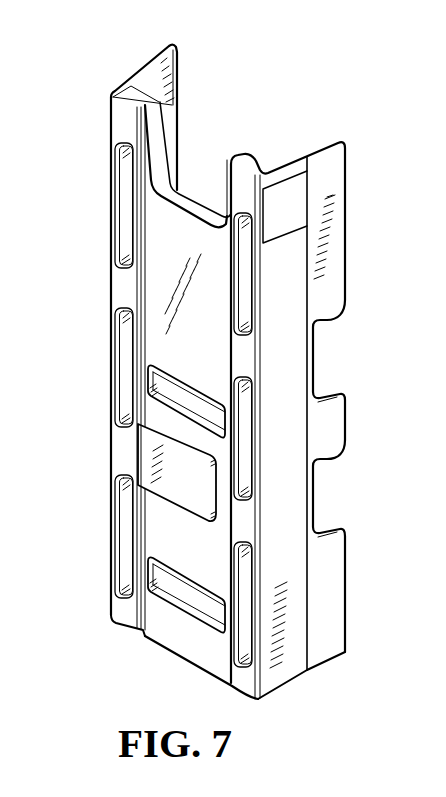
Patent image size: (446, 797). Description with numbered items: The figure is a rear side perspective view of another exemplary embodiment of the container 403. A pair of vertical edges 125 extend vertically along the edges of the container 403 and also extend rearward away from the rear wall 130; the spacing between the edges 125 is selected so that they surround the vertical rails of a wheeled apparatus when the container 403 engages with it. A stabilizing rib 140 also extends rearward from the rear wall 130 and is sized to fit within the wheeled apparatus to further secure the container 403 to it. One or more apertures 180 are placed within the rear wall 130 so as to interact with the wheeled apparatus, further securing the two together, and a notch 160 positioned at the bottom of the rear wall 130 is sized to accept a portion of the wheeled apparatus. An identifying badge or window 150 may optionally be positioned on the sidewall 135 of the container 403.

The container 403 is at (102, 83).
The vertical edges 125 is at (127, 293).
The rear wall 130 is at (168, 353).
The sidewall 135 is at (320, 576).
The stabilizing rib 140 is at (167, 462).
The identifying badge or window 150 is at (277, 222).
The notch 160 is at (150, 638).
The apertures 180 is at (185, 393).